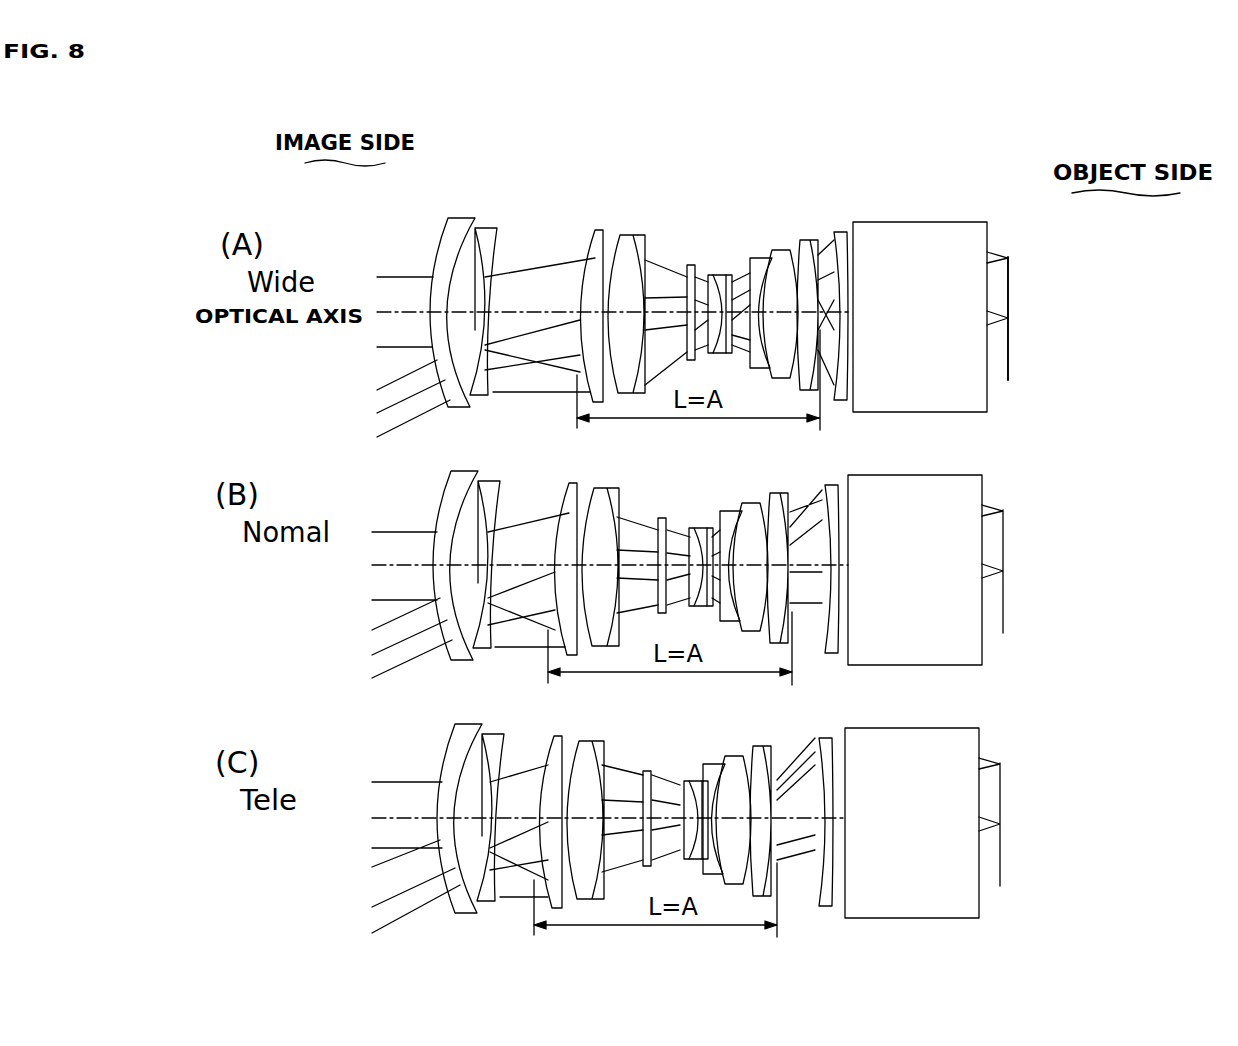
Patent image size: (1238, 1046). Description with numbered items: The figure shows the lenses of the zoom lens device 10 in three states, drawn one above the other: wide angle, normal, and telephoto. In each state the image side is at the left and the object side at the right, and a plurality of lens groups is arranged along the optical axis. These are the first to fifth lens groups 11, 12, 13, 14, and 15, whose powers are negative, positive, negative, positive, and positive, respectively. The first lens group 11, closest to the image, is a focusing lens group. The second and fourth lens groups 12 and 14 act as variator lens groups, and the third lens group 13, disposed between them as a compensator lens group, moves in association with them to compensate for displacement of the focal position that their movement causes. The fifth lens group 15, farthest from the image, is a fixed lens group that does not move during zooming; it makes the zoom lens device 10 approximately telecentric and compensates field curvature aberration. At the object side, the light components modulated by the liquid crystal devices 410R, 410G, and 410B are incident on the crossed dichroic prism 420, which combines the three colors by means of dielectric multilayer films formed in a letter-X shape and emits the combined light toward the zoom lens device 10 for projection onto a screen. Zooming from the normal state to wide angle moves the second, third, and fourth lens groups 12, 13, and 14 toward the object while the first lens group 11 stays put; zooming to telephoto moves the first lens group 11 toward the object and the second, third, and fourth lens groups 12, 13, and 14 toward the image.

The zoom lens device 10 is at (850, 163).
The first lens group 11 is at (498, 212).
The second lens group 12 is at (695, 212).
The third lens group 13 is at (733, 212).
The fourth lens group 14 is at (817, 212).
The fifth lens group 15 is at (850, 212).
The crossed dichroic prism 420 is at (946, 240).
The liquid crystal device 410R is at (1012, 290).
The liquid crystal device 410G is at (1074, 318).
The liquid crystal device 410B is at (1116, 318).